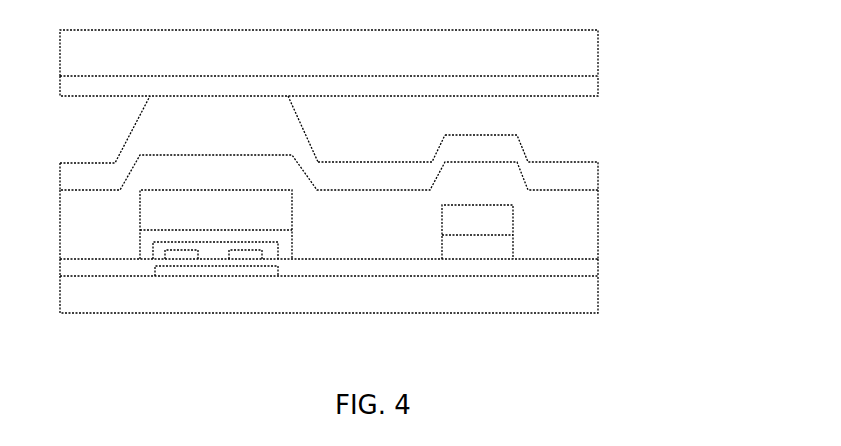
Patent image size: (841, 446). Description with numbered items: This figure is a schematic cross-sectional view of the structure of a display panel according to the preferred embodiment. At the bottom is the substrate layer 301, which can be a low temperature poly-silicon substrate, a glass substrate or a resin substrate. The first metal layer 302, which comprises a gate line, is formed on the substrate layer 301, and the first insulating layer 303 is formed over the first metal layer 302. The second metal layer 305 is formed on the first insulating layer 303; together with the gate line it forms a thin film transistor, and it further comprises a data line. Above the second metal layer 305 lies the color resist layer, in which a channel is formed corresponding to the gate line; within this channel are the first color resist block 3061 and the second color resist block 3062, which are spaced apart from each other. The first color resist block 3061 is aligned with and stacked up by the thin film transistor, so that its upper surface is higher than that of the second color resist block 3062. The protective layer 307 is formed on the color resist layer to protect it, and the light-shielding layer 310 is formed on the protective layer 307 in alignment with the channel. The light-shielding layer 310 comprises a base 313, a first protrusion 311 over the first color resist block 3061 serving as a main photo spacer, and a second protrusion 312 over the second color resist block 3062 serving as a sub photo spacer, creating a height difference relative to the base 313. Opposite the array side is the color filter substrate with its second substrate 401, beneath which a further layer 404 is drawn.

The second substrate 401 is at (580, 48).
The filler / adhesive layer 404 is at (580, 83).
The first protrusion 311 is at (160, 120).
The base 313 is at (378, 178).
The second protrusion 312 is at (512, 143).
The light-shielding layer 310 is at (580, 177).
The protective layer 307 is at (580, 218).
The first insulating layer 303 is at (577, 266).
The substrate layer 301 is at (580, 295).
The first color resist block 3061 is at (284, 243).
The second color resist block 3062 is at (480, 248).
The second metal layer 305 is at (242, 255).
The first metal layer 302 is at (185, 268).